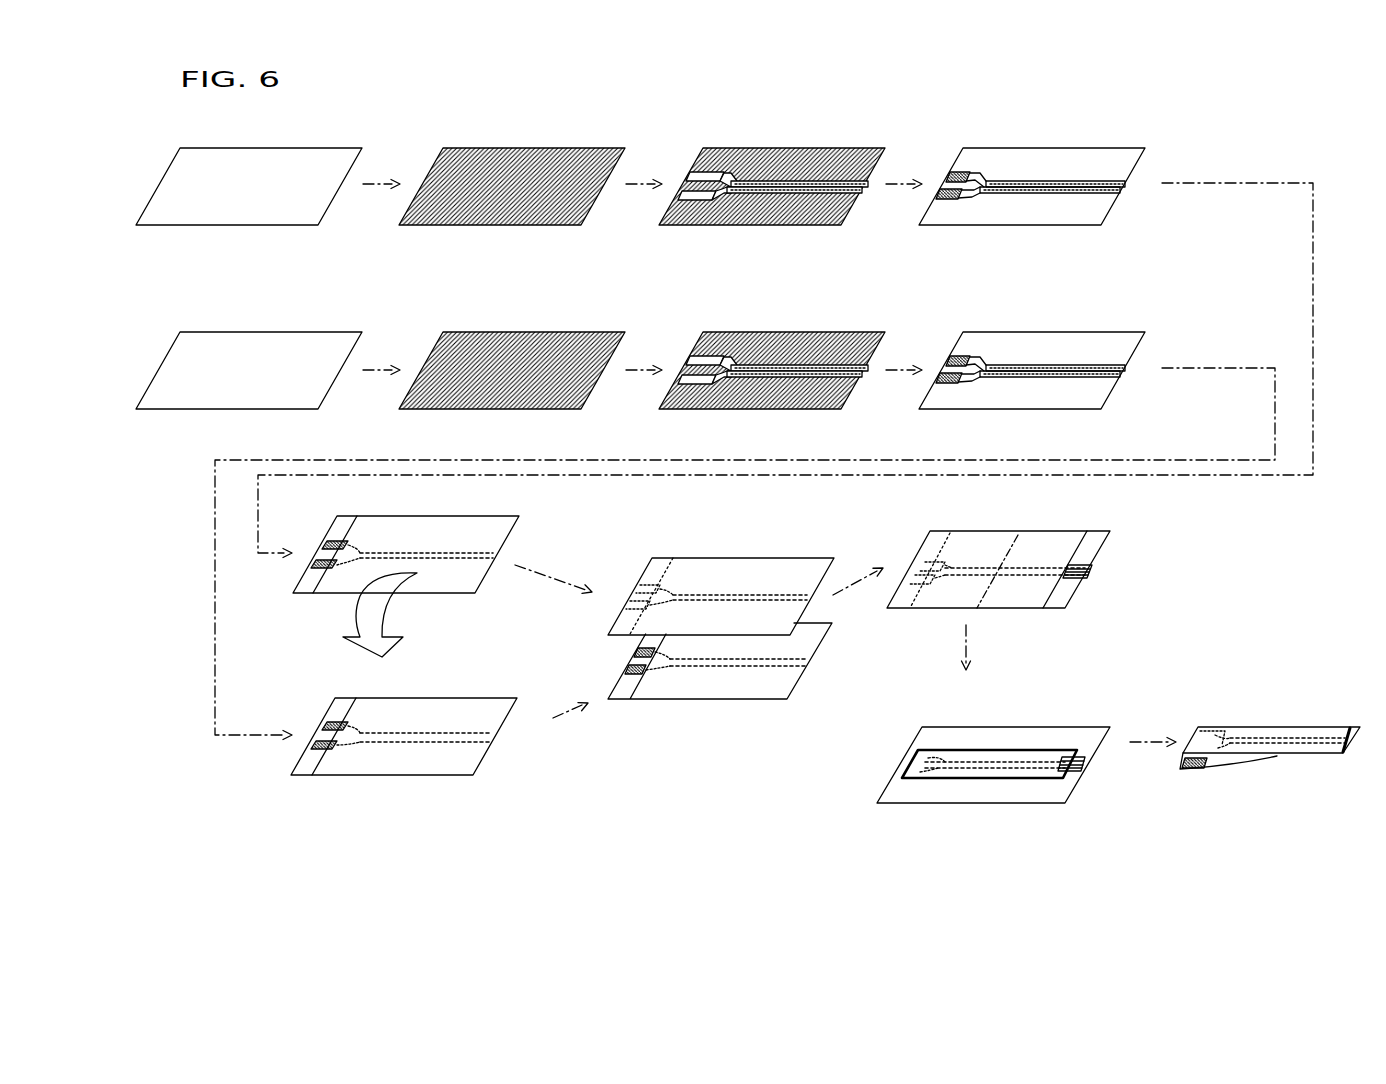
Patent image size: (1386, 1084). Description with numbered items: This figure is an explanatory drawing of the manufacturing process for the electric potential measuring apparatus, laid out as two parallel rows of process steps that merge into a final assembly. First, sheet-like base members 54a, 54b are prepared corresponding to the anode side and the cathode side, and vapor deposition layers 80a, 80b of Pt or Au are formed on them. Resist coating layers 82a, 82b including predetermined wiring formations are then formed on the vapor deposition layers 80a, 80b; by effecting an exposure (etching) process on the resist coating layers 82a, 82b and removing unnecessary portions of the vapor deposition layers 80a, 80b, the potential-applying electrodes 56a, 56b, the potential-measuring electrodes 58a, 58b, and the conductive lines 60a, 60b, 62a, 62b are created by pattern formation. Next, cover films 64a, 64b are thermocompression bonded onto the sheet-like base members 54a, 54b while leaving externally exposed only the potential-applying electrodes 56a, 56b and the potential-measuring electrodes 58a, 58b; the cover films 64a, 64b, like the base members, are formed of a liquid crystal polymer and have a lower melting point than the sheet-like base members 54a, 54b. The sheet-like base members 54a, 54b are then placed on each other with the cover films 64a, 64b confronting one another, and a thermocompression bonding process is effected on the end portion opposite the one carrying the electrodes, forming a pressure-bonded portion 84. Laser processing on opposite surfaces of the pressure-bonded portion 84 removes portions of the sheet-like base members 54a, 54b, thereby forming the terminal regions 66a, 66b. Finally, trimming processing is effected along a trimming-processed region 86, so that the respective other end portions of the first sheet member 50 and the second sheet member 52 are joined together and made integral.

The first sheet member 50 is at (1264, 730).
The second sheet member 52 is at (1262, 768).
The sheet-like base member 54a is at (304, 168).
The sheet-like base member 54b is at (304, 352).
The potential-applying electrode 56a is at (685, 200).
The potential-applying electrode 56b is at (707, 356).
The potential-measuring electrode 58a is at (708, 172).
The potential-measuring electrode 58b is at (683, 386).
The conductive line 60a is at (1040, 190).
The conductive line 60b is at (1025, 368).
The conductive line 62a is at (1035, 180).
The conductive line 62b is at (1033, 378).
The cover film 64a is at (410, 540).
The cover film 64b is at (410, 722).
The terminal region 66a is at (1082, 565).
The terminal region 66b is at (1372, 698).
The vapor deposition layer 80a is at (477, 165).
The vapor deposition layer 80b is at (477, 350).
The resist coating layer 82a is at (764, 182).
The resist coating layer 82b is at (764, 367).
The pressure-bonded portion 84 is at (1037, 598).
The trimming-processed region 86 is at (1005, 757).